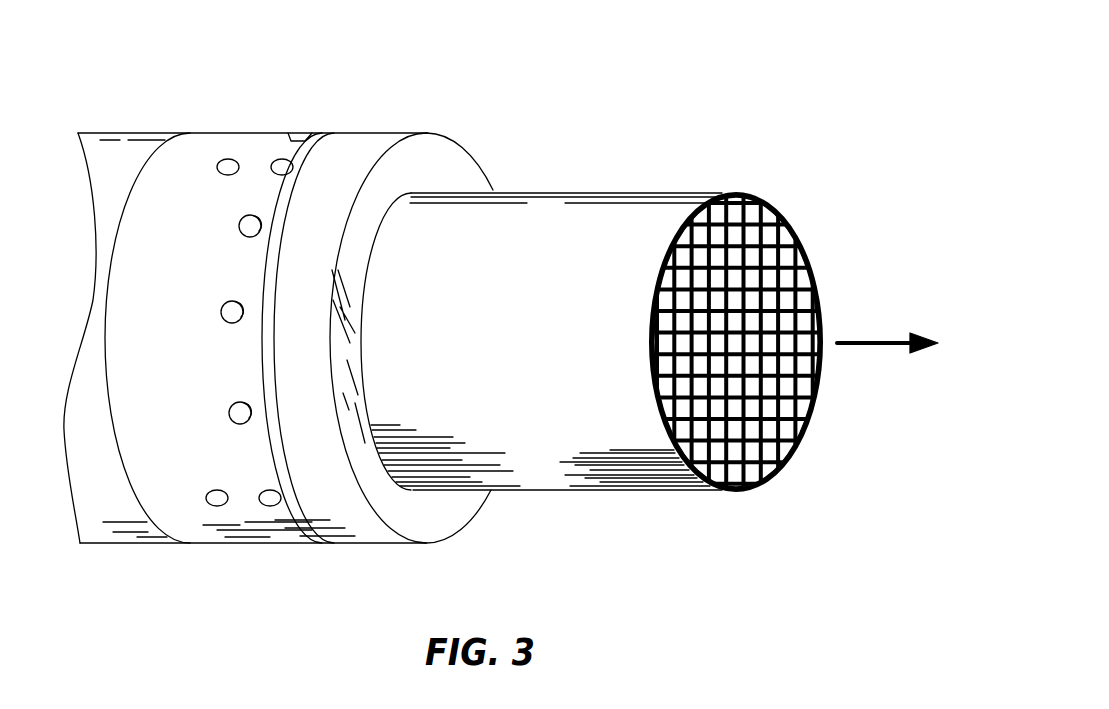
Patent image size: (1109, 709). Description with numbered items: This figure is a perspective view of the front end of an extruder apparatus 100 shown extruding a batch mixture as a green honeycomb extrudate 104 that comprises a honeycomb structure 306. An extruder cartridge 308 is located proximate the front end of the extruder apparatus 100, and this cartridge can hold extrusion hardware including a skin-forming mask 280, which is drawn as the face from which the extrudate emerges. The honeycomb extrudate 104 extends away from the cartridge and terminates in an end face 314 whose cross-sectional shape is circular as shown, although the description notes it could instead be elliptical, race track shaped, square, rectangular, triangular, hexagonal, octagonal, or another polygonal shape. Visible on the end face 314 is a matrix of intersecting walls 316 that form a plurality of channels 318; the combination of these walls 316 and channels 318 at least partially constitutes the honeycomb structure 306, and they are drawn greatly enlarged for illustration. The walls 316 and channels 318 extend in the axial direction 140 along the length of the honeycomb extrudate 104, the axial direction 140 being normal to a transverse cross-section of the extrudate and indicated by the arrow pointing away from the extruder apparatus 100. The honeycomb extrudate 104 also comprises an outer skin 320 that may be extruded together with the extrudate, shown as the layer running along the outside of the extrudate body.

The extruder apparatus 100 is at (249, 112).
The extruder cartridge 308 is at (395, 122).
The skin-forming mask 280 is at (427, 520).
The green honeycomb extrudate 104 is at (610, 510).
The outer skin 320 is at (549, 244).
The end face 314 is at (773, 198).
The honeycomb structure 306 is at (780, 458).
The intersecting walls 316 is at (786, 413).
The channels 318 is at (788, 278).
The axial direction 140 is at (900, 338).